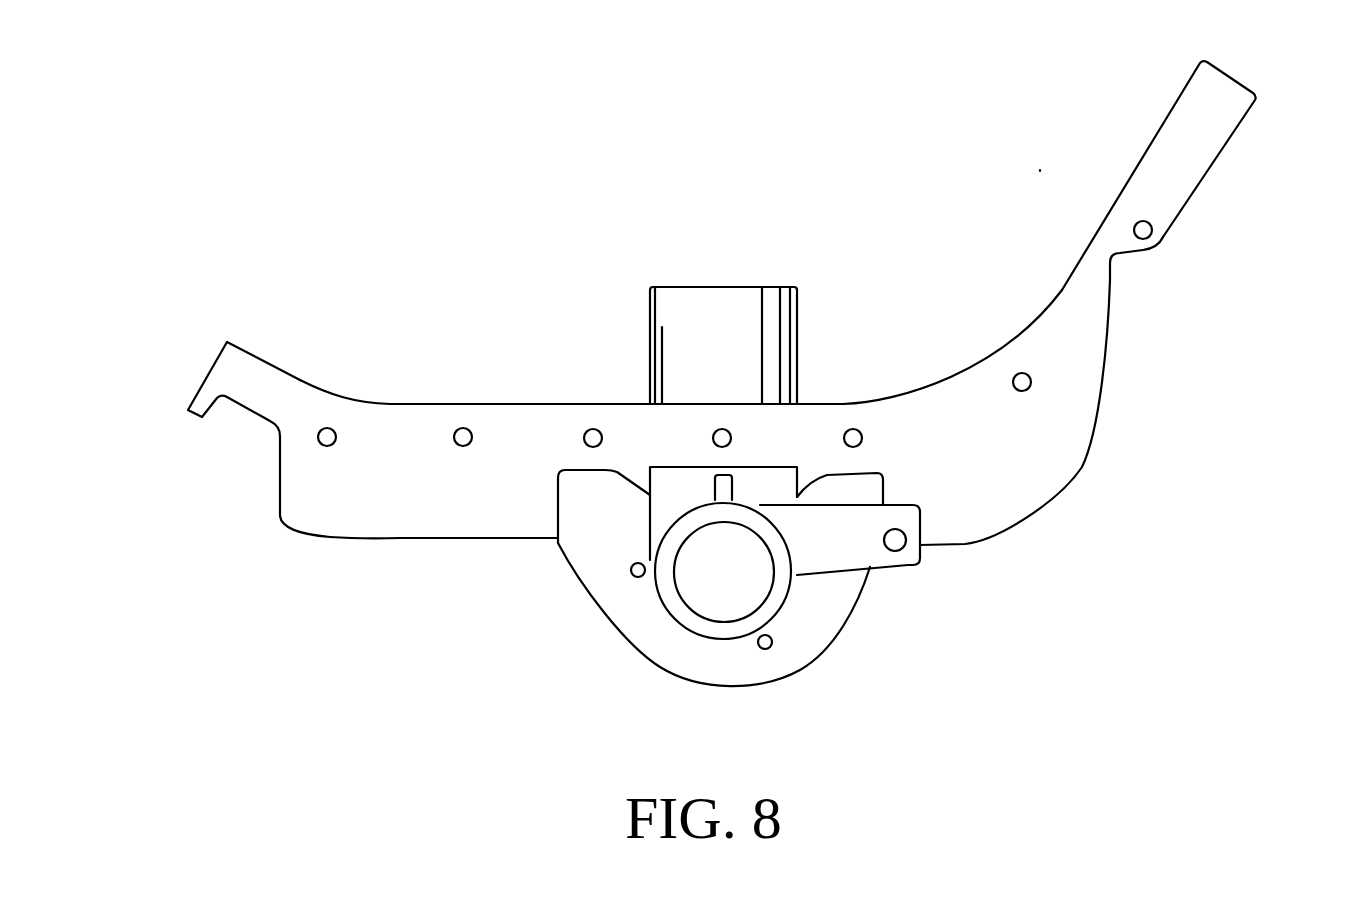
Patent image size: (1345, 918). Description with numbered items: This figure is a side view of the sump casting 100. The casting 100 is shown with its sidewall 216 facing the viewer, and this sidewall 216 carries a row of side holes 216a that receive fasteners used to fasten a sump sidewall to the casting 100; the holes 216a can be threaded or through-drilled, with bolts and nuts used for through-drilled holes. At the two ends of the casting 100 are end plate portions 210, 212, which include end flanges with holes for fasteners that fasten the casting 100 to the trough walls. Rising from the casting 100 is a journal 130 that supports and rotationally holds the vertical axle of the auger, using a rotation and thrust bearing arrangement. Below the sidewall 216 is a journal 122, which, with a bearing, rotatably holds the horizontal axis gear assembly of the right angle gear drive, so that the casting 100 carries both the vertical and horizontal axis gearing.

The casting 100 is at (970, 223).
The end plate portion 210 is at (1213, 167).
The end plate portion 212 is at (248, 415).
The sidewall 216 is at (500, 420).
The side holes 216a is at (455, 433).
The journal 130 is at (648, 322).
The journal 122 is at (690, 638).